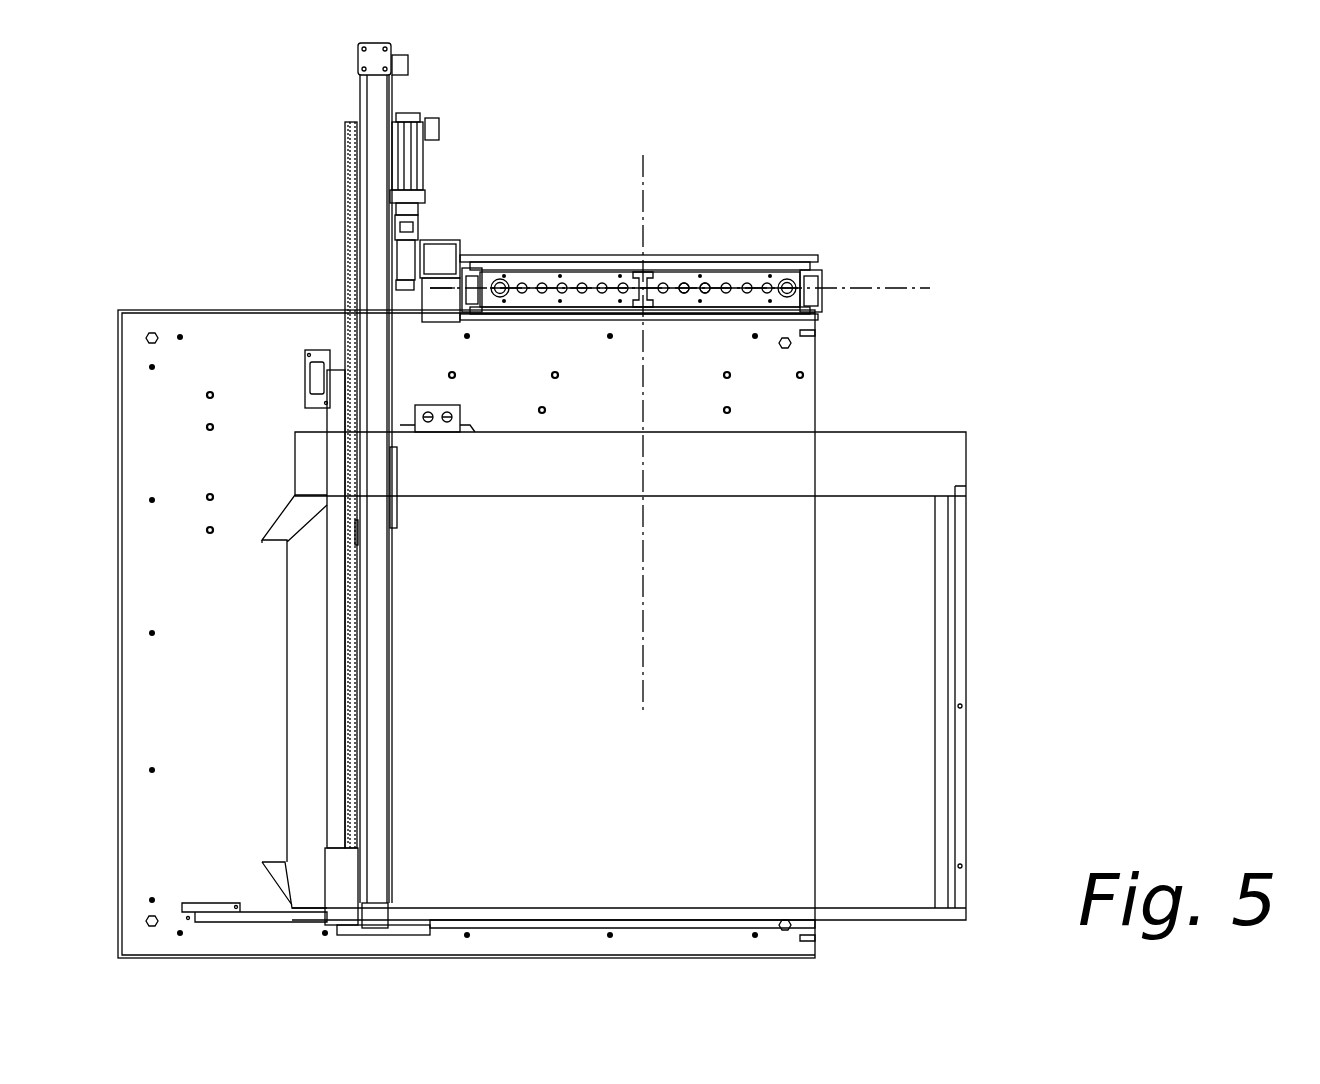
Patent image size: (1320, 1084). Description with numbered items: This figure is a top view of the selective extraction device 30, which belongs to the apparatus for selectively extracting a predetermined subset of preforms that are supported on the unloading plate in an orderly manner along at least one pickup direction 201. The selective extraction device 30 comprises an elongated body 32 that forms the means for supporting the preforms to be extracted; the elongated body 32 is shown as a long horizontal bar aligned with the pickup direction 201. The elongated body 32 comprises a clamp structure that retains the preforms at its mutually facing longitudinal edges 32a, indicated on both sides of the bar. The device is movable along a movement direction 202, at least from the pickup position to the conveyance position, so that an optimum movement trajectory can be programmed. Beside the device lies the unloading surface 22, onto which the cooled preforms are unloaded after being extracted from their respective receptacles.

The selective extraction device 30 is at (308, 193).
The elongated body 32 is at (735, 275).
The mutually facing longitudinal edges 32a is at (686, 283).
The pickup direction 201 is at (885, 288).
The movement direction 202 is at (648, 566).
The unloading surface 22 is at (880, 660).